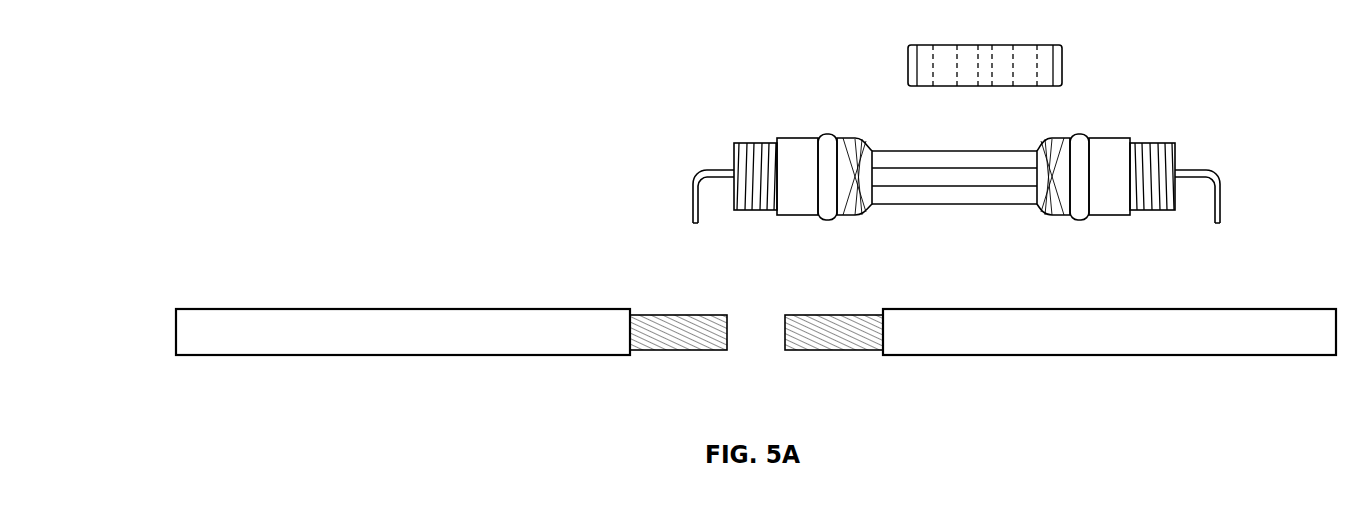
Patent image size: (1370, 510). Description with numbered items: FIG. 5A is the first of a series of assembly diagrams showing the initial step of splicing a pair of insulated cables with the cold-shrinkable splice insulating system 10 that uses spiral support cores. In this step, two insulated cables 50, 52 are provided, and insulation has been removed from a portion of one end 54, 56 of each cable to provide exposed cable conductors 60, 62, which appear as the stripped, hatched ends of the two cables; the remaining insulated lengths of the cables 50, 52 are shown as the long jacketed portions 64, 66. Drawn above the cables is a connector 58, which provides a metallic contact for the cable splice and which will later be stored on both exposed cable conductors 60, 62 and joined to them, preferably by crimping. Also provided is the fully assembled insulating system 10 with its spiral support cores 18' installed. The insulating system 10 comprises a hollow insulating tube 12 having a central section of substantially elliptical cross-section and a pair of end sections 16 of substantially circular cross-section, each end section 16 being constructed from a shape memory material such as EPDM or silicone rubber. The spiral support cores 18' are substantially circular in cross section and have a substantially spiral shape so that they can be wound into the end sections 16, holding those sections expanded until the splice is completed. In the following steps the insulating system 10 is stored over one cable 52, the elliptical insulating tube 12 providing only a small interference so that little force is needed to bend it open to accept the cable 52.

The insulating system 10 is at (963, 136).
The insulating tube 12 is at (905, 151).
The end sections 16 is at (800, 138).
The spiral support cores 18' is at (956, 152).
The connector 58 is at (984, 46).
The insulated cable 50 is at (370, 309).
The insulated cable 52 is at (1068, 309).
The cable end 54 is at (675, 315).
The cable end 56 is at (826, 315).
The exposed cable conductor 60 is at (676, 350).
The exposed cable conductor 62 is at (835, 350).
The first cable insulation 64 is at (562, 309).
The second cable insulation 66 is at (958, 309).